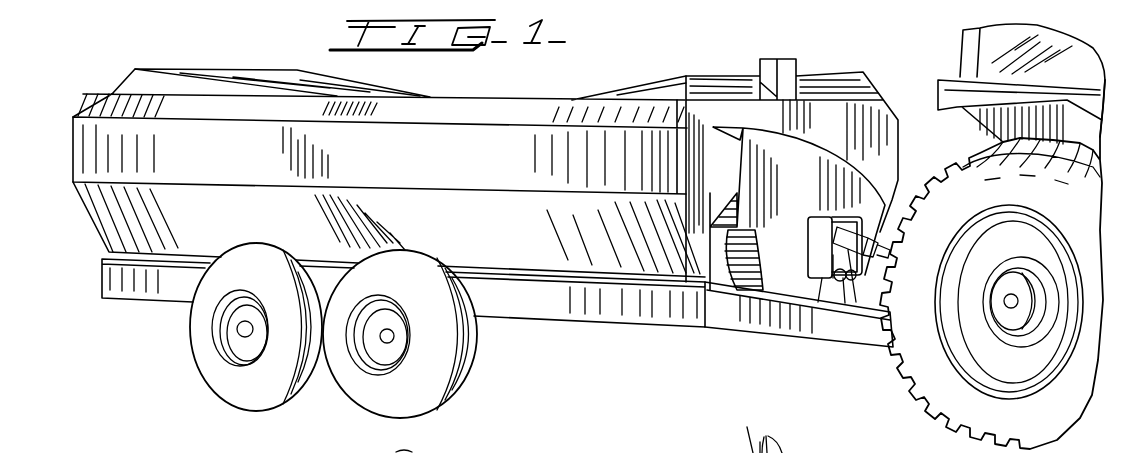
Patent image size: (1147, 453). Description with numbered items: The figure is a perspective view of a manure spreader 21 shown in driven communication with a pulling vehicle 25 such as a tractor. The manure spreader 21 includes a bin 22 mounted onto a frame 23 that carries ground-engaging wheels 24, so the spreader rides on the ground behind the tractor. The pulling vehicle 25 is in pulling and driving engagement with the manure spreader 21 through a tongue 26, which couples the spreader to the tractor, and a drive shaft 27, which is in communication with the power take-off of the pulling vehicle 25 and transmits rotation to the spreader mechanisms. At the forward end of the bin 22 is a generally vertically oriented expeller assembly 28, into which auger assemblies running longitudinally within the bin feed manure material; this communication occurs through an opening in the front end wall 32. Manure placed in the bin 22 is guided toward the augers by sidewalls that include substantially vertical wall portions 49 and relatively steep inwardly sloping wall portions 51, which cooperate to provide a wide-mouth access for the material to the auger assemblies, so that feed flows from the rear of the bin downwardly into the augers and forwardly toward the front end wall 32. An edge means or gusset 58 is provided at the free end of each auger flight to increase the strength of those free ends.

The manure spreader 21 is at (96, 247).
The bin 22 is at (73, 153).
The frame 23 is at (101, 272).
The ground-engaging wheels 24 is at (201, 347).
The pulling vehicle 25 is at (1093, 98).
The tongue 26 is at (836, 331).
The drive shaft 27 is at (890, 252).
The expeller assembly 28 is at (808, 207).
The front end wall 32 is at (839, 138).
The substantially vertical wall portions 49 is at (438, 165).
The inwardly sloping wall portions 51 is at (495, 244).
The gusset 58 is at (589, 433).